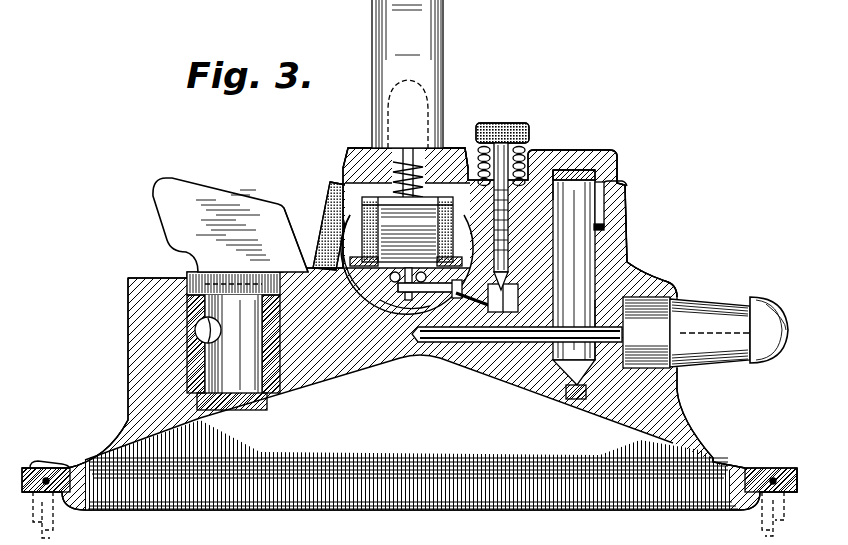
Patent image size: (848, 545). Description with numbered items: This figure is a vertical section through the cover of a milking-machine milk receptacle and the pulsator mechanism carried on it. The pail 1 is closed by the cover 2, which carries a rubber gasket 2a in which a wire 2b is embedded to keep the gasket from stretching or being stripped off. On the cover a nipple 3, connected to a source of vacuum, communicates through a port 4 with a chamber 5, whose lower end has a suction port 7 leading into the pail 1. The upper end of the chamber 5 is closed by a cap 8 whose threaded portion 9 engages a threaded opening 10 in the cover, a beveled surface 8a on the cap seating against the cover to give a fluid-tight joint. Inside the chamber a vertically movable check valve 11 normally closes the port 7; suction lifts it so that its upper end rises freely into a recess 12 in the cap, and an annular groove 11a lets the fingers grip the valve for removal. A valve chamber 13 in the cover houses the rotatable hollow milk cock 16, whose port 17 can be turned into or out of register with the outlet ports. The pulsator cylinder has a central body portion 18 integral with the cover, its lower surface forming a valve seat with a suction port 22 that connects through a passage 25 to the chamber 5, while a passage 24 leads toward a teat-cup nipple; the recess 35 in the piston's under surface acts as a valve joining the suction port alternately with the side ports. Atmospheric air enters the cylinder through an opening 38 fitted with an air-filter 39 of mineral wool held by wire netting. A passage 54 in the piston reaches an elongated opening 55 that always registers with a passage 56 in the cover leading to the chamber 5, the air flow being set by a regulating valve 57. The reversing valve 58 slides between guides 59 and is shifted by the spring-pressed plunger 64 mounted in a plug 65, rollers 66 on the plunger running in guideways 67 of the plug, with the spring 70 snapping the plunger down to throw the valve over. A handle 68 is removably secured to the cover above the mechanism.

The pail 1 is at (50, 531).
The cover 2 is at (699, 446).
The rubber gasket 2a is at (33, 466).
The wire 2b is at (48, 476).
The nipple 3 is at (729, 332).
The port 4 is at (623, 337).
The chamber 5 is at (634, 279).
The suction port 7 is at (574, 400).
The cap 8 is at (618, 158).
The beveled surface 8a is at (578, 152).
The threaded portion 9 is at (627, 217).
The threaded opening 10 is at (629, 200).
The check valve 11 is at (578, 291).
The annular groove 11a is at (589, 166).
The recess 12 is at (586, 160).
The valve chamber 13 is at (218, 360).
The milk cock 16 is at (249, 398).
The port 17 is at (198, 333).
The central body portion 18 is at (529, 195).
The suction port 22 is at (401, 336).
The passage 24 is at (362, 372).
The passage 25 is at (482, 312).
The recess 35 is at (396, 346).
The opening 38 is at (314, 229).
The air-filter 39 is at (296, 209).
The passage 54 is at (425, 302).
The elongated opening 55 is at (446, 300).
The passage 56 is at (493, 320).
The regulating valve 57 is at (509, 178).
The reversing valve 58 is at (624, 240).
The guides 59 is at (625, 258).
The plunger 64 is at (414, 134).
The plug 65 is at (355, 148).
The rollers 66 is at (330, 184).
The guideways 67 is at (300, 238).
The handle 68 is at (443, 78).
The spring 70 is at (441, 152).